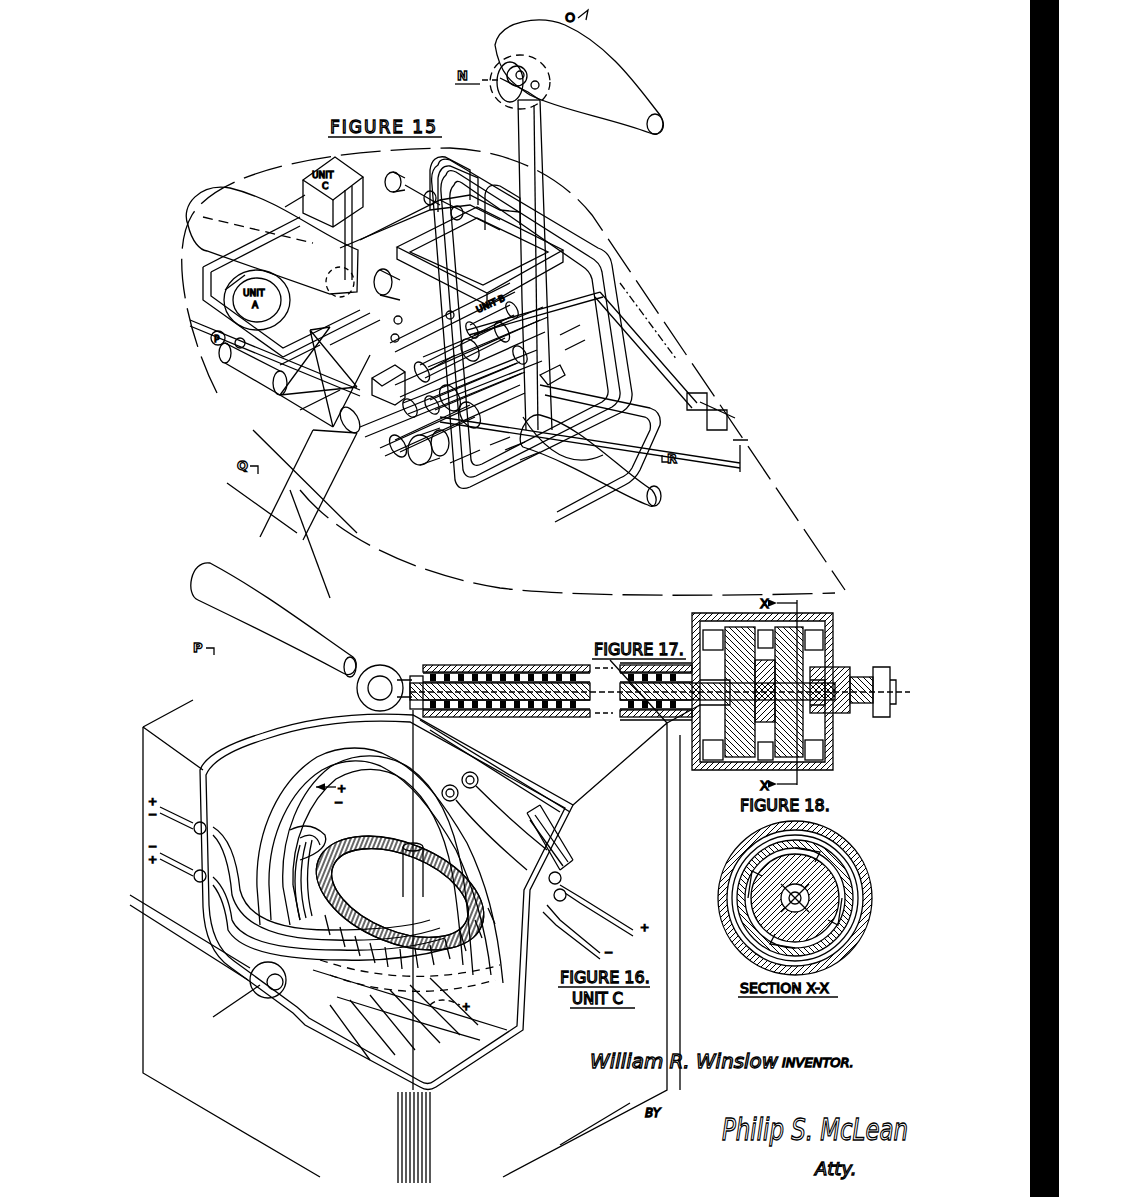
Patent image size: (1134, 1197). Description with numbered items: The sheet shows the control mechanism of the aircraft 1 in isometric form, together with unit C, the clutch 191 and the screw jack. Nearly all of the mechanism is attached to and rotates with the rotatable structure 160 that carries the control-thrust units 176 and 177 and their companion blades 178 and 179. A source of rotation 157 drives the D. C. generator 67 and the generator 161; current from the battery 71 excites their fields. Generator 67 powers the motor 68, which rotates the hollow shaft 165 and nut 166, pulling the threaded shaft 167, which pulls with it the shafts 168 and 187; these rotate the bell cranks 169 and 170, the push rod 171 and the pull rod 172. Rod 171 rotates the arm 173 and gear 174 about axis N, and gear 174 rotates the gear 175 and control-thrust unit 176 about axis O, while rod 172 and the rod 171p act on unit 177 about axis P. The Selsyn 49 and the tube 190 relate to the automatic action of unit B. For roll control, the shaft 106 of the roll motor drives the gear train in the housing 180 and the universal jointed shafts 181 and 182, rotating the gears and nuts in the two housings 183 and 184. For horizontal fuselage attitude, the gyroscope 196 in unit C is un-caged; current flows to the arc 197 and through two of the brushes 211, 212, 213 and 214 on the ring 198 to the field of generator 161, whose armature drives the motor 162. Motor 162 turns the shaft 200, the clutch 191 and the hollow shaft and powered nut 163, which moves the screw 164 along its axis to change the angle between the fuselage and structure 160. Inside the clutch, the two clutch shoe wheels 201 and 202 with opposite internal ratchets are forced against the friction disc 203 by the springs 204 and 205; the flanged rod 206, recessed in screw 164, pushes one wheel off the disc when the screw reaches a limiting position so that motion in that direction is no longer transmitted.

In FIG. 15, the aircraft 1 is at (225, 290).
In FIG. 15, the Selsyn 49 is at (228, 365).
In FIG. 15, the D. C. generator 67 is at (455, 205).
In FIG. 15, the motor 68 is at (450, 468).
In FIG. 15, the battery 71 is at (300, 410).
In FIG. 15, the shaft 106 is at (280, 365).
In FIG. 15, the source of rotation 157 is at (392, 142).
In FIG. 15, the rotatable structure 160 is at (518, 115).
In FIG. 15, the generator 161 is at (430, 175).
In FIG. 15, the motor 162 is at (728, 437).
In FIG. 15, the hollow shaft and powered nut 163 is at (653, 343).
In FIG. 17, the hollow shaft and powered nut 163 is at (495, 667).
In FIG. 15, the screw 164 is at (613, 300).
In FIG. 15, the hollow shaft 165 is at (503, 455).
In FIG. 15, the nut 166 is at (520, 462).
In FIG. 15, the threaded shaft 167 is at (537, 477).
In FIG. 15, the shaft 168 is at (577, 353).
In FIG. 15, the bell crank 169 is at (572, 337).
In FIG. 15, the bell crank 170 is at (340, 456).
In FIG. 15, the push rod 171 is at (545, 148).
In FIG. 15, the rod 171p is at (290, 490).
In FIG. 15, the pull rod 172 is at (330, 510).
In FIG. 15, the arm 173 is at (498, 92).
In FIG. 15, the gear 174 is at (520, 72).
In FIG. 15, the gear 175 is at (537, 84).
In FIG. 15, the control-thrust unit 176 is at (633, 97).
In FIG. 15, the control-thrust unit 177 is at (313, 618).
In FIG. 15, the blade 178 is at (248, 200).
In FIG. 15, the blade 179 is at (620, 495).
In FIG. 15, the housing 180 is at (360, 264).
In FIG. 15, the universal jointed shaft 181 is at (447, 335).
In FIG. 15, the universal jointed shaft 182 is at (451, 317).
In FIG. 15, the housing 183 is at (470, 358).
In FIG. 15, the housing 184 is at (471, 381).
In FIG. 15, the shaft 187 is at (395, 440).
In FIG. 15, the tube 190 is at (330, 345).
In FIG. 15, the clutch 191 is at (707, 398).
In FIG. 16, the gyroscope 196 is at (317, 863).
In FIG. 16, the arc 197 is at (330, 797).
In FIG. 16, the ring 198 is at (392, 800).
In FIG. 15, the shaft 200 is at (722, 415).
In FIG. 17, the shaft 200 is at (850, 672).
In FIG. 18, the shaft 200 is at (795, 898).
In FIG. 17, the clutch shoe wheel 201 is at (720, 650).
In FIG. 17, the clutch shoe wheel 202 is at (805, 748).
In FIG. 17, the friction disc 203 is at (785, 760).
In FIG. 17, the spring 204 is at (725, 635).
In FIG. 17, the spring 205 is at (800, 745).
In FIG. 17, the rod 206 is at (650, 722).
In FIG. 16, the brush 211 is at (293, 830).
In FIG. 16, the brush 212 is at (300, 835).
In FIG. 16, the brush 213 is at (306, 840).
In FIG. 16, the brush 214 is at (312, 845).